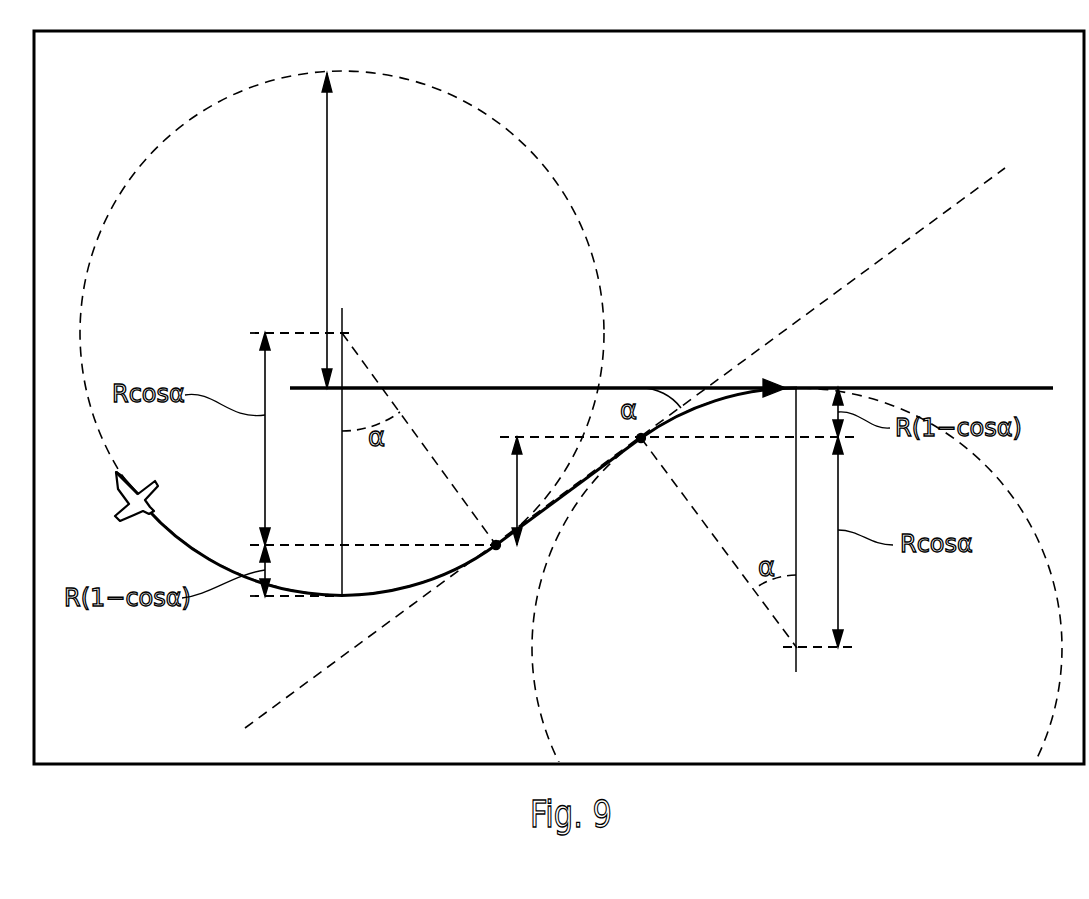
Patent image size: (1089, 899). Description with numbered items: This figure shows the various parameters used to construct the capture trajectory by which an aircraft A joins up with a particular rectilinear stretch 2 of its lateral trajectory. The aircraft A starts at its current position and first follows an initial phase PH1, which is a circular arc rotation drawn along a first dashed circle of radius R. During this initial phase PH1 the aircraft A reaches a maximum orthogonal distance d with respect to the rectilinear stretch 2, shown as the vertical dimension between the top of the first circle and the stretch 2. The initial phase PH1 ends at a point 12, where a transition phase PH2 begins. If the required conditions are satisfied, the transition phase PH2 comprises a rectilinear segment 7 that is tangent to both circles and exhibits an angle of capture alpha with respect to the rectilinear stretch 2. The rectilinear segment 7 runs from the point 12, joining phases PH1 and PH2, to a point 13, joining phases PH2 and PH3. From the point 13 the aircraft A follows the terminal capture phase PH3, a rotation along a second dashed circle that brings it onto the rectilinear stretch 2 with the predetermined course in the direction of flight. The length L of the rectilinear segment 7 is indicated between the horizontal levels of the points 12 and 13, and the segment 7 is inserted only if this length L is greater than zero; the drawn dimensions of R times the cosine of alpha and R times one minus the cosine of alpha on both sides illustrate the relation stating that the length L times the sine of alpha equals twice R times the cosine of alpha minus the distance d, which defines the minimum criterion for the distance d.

The rectilinear stretch 2 is at (957, 388).
The rectilinear segment 7 is at (467, 493).
The joining point of phases PH1 and PH2 12 is at (496, 550).
The joining point of phases PH2 and PH3 13 is at (643, 444).
The aircraft A is at (148, 500).
The initial phase PH1 is at (275, 603).
The transition phase PH2 is at (550, 490).
The terminal capture phase PH3 is at (706, 388).
The distance d is at (328, 203).
The length L is at (509, 491).